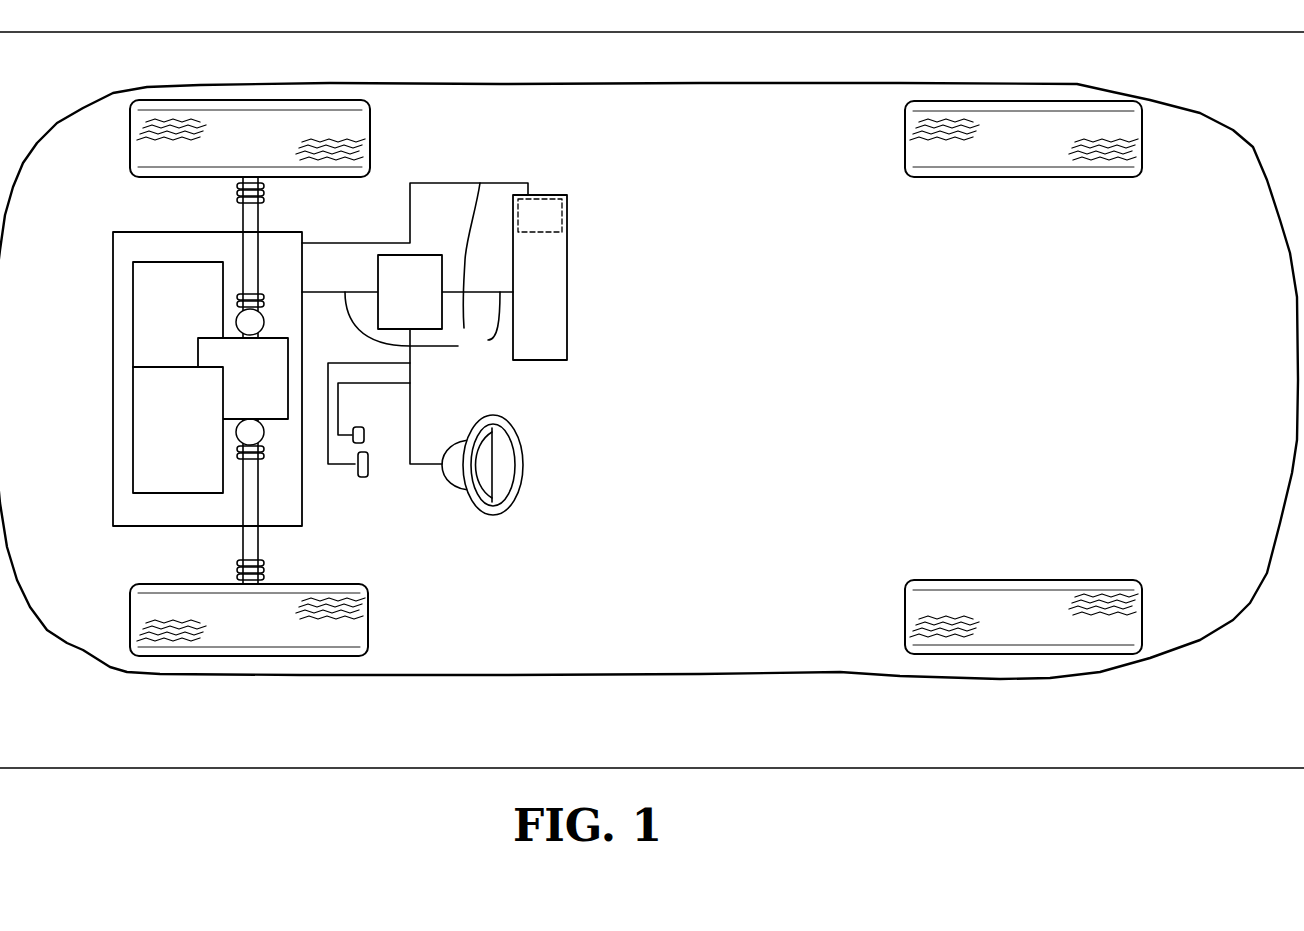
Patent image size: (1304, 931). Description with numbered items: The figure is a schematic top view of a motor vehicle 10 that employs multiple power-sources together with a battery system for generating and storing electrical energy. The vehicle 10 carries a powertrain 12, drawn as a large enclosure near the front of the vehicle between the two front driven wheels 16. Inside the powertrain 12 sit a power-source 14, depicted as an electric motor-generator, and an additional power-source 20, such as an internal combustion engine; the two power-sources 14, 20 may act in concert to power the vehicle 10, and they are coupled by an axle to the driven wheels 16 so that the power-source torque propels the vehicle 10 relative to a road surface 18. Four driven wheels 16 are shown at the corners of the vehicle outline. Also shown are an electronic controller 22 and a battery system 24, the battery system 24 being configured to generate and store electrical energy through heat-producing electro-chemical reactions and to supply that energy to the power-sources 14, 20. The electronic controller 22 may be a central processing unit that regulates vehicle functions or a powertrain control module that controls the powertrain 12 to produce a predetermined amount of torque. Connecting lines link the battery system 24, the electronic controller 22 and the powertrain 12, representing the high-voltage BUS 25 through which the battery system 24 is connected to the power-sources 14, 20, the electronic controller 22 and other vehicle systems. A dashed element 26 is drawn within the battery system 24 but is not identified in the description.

The motor vehicle 10 is at (588, 675).
The powertrain 12 is at (263, 380).
The power-source 14 is at (192, 306).
The driven wheels 16 is at (358, 133).
The road surface 18 is at (1198, 715).
The additional power-source 20 is at (193, 432).
The electronic controller 22 is at (397, 306).
The battery system 24 is at (527, 306).
The high-voltage BUS 25 is at (422, 325).
The sensor 26 is at (563, 212).